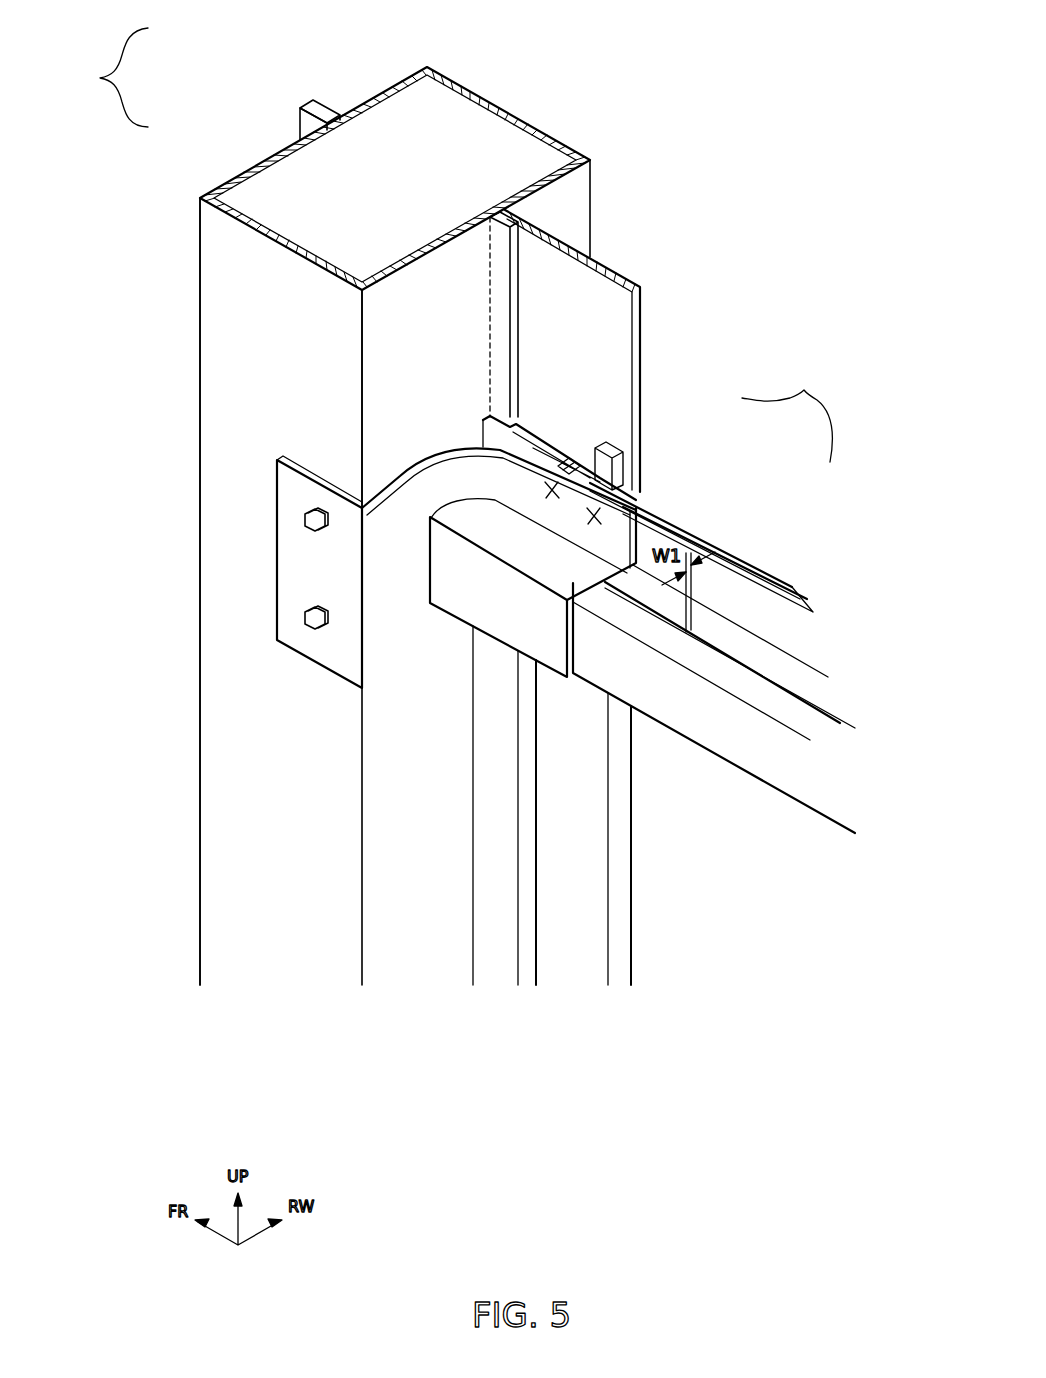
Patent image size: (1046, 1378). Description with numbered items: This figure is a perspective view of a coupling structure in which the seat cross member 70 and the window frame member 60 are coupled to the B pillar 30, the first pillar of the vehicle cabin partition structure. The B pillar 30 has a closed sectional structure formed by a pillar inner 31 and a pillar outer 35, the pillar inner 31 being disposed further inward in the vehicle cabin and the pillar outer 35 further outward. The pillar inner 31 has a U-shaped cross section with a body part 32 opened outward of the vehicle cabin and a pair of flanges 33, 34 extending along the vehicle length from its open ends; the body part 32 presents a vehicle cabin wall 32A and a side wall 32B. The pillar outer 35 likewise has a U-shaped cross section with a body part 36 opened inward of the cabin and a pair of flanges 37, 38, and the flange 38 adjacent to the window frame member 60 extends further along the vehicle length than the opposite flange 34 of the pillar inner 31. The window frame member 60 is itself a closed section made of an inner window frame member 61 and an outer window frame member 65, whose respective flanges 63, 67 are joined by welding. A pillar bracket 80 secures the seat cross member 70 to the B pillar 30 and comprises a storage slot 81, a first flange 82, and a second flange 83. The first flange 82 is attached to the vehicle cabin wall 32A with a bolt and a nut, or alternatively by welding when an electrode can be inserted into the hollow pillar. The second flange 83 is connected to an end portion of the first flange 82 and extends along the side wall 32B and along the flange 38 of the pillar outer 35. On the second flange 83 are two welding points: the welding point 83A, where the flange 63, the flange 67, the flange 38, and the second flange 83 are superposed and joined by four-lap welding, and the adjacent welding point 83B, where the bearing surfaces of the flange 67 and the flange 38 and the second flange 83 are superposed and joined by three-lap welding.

The B pillar 30 is at (107, 77).
The pillar inner 31 is at (250, 167).
The body part 32 is at (198, 222).
The vehicle cabin wall 32A is at (245, 338).
The side wall 32B is at (402, 310).
The flange 33 is at (308, 121).
The flange 34 is at (495, 243).
The pillar outer 35 is at (385, 88).
The body part 36 is at (503, 103).
The flange 37 is at (323, 100).
The flange 38 is at (537, 250).
The window frame member 60 is at (787, 414).
The inner window frame member 61 is at (793, 588).
The flange 63 is at (735, 588).
The outer window frame member 65 is at (714, 534).
The flange 67 is at (677, 516).
The seat cross member 70 is at (737, 766).
The pillar bracket 80 is at (277, 505).
The storage slot 81 is at (533, 627).
The first flange 82 is at (300, 583).
The second flange 83 is at (533, 472).
The welding point 83A is at (543, 491).
The welding point 83B is at (585, 518).